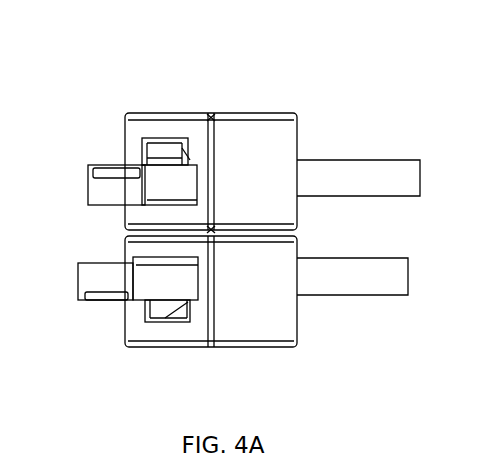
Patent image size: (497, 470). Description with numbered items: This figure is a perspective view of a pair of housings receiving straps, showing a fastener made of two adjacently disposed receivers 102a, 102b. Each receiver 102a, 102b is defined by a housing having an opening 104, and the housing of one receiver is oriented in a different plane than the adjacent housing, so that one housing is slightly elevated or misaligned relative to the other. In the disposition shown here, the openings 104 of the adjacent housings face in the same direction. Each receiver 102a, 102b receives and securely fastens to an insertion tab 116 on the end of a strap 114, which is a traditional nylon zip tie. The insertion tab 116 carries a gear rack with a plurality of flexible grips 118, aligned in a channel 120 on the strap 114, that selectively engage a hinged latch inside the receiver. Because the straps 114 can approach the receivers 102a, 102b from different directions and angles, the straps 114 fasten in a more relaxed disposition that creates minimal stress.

The receiver 102a is at (278, 117).
The receiver 102b is at (297, 334).
The opening 104 is at (181, 140).
The strap 114 is at (395, 163).
The insertion tab 116 is at (98, 195).
The flexible grips 118 is at (104, 172).
The channel 120 is at (104, 296).